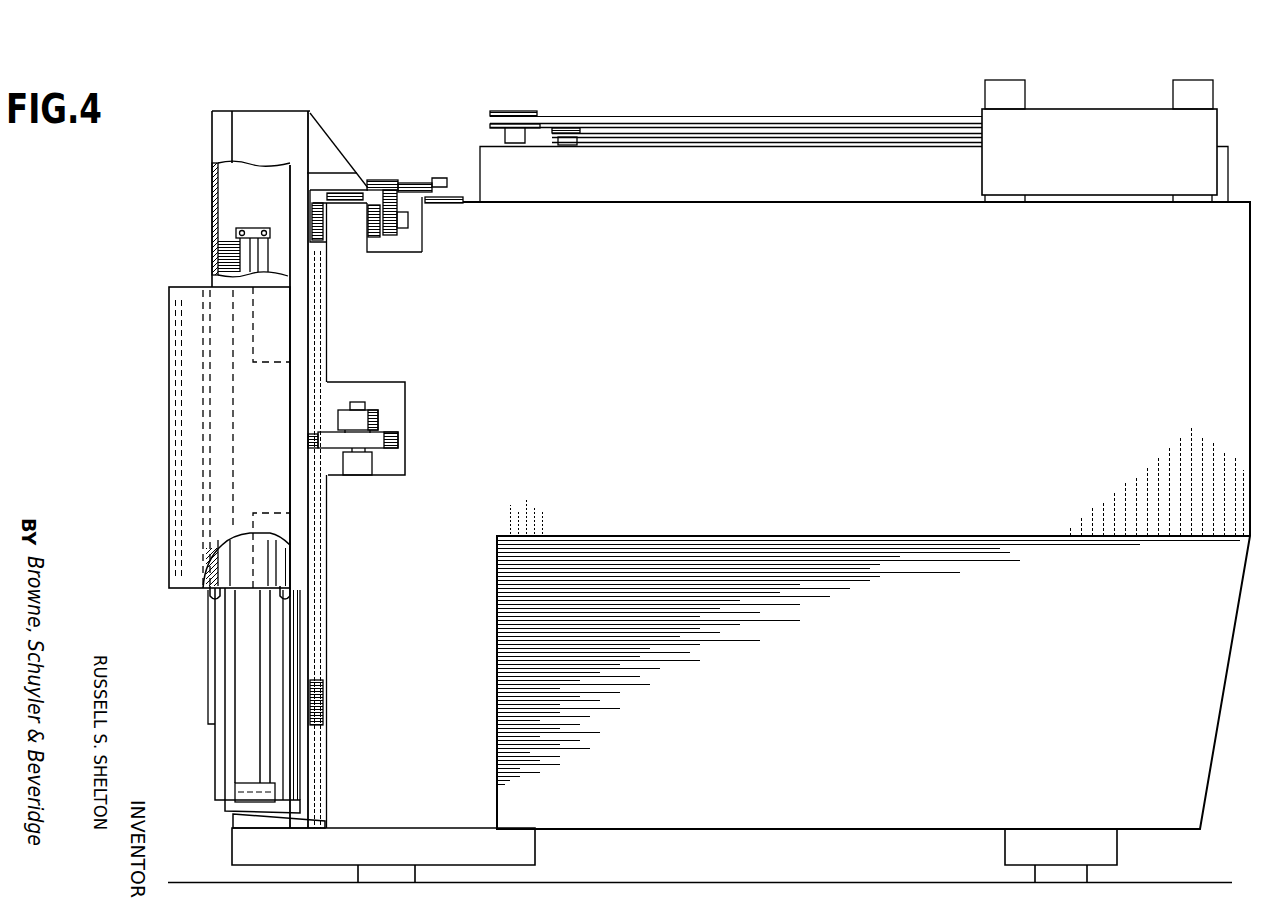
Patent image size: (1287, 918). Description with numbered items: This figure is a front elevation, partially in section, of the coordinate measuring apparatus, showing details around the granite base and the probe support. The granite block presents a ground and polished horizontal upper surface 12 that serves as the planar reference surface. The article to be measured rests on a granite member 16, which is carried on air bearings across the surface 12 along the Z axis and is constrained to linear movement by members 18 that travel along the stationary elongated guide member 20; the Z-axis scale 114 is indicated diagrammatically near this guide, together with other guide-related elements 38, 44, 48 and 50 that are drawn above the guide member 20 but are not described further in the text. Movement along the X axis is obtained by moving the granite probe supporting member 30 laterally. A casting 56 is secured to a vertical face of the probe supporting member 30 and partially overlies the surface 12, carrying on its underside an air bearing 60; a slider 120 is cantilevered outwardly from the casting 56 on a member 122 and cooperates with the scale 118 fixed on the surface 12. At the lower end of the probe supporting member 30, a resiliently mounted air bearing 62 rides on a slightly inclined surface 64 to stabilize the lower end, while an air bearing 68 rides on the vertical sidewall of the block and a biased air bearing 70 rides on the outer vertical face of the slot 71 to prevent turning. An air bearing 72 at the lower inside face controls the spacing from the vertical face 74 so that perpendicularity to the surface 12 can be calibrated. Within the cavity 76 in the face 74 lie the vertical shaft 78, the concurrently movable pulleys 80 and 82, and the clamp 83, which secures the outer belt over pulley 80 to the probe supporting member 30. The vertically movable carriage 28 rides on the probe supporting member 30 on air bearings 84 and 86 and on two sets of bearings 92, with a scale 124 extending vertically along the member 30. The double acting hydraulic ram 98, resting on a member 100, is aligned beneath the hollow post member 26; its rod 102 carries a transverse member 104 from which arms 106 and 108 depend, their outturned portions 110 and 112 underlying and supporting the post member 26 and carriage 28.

The horizontal upper surface 12 is at (620, 202).
The granite member 16 is at (1114, 108).
The members 18 is at (1012, 88).
The stationary elongated guide member 20 is at (753, 191).
The post member 26 is at (212, 218).
The carriage 28 is at (175, 476).
The probe supporting member 30 is at (222, 712).
The rail 38 is at (828, 131).
The rail support 44 is at (575, 129).
The upper rail 48 is at (753, 122).
The end plate 50 is at (538, 114).
The casting 56 is at (356, 162).
The air bearing 60 is at (343, 190).
The air bearing 62 is at (305, 806).
The inclined surface 64 is at (328, 822).
The air bearing 68 is at (324, 238).
The air bearing 70 is at (371, 253).
The slot 71 is at (421, 248).
The air bearing 72 is at (322, 695).
The vertical face 74 is at (328, 548).
The cavity 76 is at (404, 403).
The vertical shaft 78 is at (360, 409).
The pulley 80 is at (398, 444).
The pulley 82 is at (343, 415).
The clamp 83 is at (327, 462).
The air bearing 84 is at (205, 425).
The air bearings 86 is at (203, 350).
The air bearings 92 is at (272, 362).
The hydraulic ram 98 is at (258, 668).
The member 100 is at (233, 803).
The rod 102 is at (236, 248).
The transverse member 104 is at (252, 228).
The arm 106 is at (236, 263).
The arm 108 is at (268, 272).
The outturned portion 110 is at (213, 595).
The outturned portion 112 is at (292, 598).
The scale 114 is at (724, 148).
The scale 118 is at (455, 205).
The slider 120 is at (437, 180).
The member 122 is at (387, 182).
The scale 124 is at (214, 660).